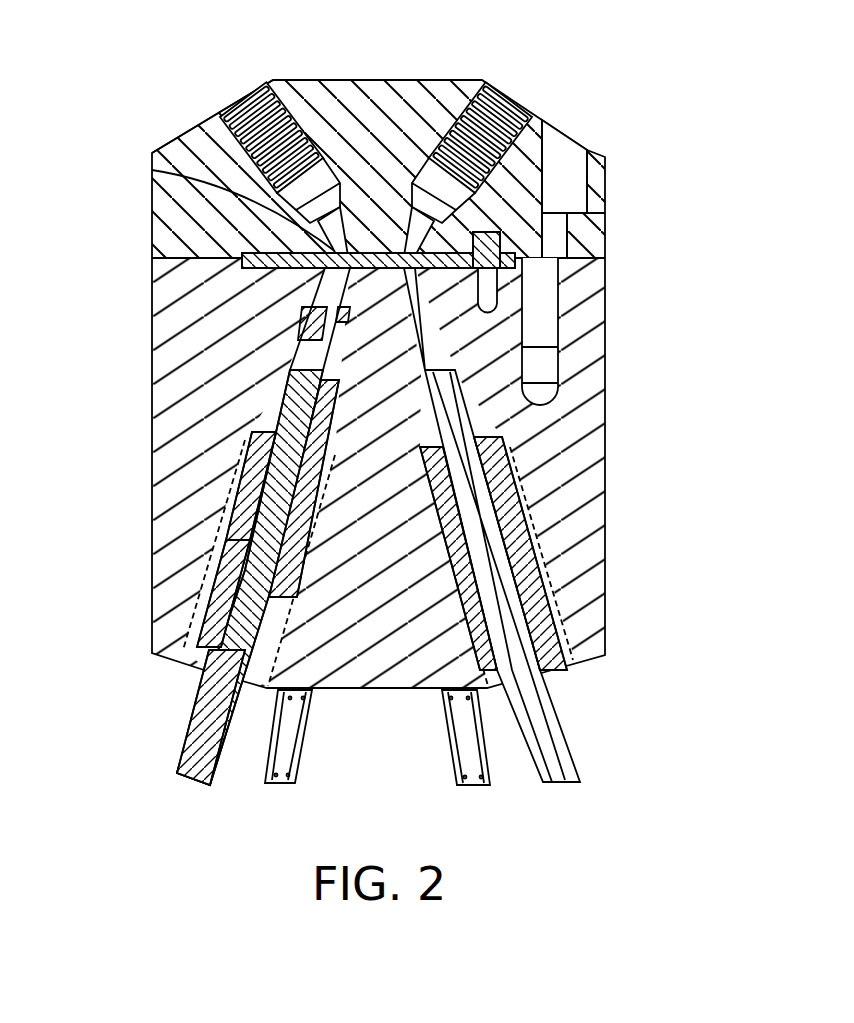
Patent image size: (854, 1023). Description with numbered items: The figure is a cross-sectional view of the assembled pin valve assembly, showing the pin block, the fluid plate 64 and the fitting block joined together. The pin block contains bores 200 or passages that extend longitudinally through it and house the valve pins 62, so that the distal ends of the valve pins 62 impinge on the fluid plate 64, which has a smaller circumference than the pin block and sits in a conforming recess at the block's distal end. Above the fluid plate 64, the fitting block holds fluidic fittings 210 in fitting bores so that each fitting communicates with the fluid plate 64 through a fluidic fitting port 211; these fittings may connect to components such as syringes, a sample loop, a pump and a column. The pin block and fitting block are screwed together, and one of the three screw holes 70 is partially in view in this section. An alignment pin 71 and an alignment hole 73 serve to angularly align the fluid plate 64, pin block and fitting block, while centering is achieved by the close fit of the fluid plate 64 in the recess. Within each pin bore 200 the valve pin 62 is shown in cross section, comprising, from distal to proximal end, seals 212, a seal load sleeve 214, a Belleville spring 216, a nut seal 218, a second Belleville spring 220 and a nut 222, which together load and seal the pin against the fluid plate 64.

The valve pin 62 is at (198, 712).
The fluid plate 64 is at (150, 233).
The screw hole 70 is at (562, 148).
The alignment pin 71 is at (497, 224).
The alignment hole 73 is at (480, 307).
The pin bore 200 is at (553, 585).
The fluidic fitting 210 is at (245, 100).
The fluidic fitting port 211 is at (150, 163).
The seal 212 is at (325, 288).
The seal load sleeve 214 is at (312, 332).
The Belleville spring 216 is at (275, 412).
The nut seal 218 is at (250, 447).
The second Belleville spring 220 is at (232, 552).
The nut 222 is at (205, 624).